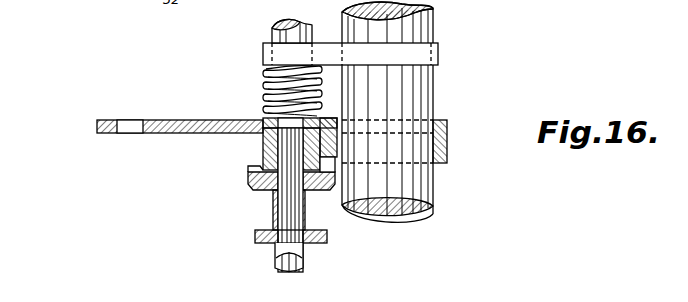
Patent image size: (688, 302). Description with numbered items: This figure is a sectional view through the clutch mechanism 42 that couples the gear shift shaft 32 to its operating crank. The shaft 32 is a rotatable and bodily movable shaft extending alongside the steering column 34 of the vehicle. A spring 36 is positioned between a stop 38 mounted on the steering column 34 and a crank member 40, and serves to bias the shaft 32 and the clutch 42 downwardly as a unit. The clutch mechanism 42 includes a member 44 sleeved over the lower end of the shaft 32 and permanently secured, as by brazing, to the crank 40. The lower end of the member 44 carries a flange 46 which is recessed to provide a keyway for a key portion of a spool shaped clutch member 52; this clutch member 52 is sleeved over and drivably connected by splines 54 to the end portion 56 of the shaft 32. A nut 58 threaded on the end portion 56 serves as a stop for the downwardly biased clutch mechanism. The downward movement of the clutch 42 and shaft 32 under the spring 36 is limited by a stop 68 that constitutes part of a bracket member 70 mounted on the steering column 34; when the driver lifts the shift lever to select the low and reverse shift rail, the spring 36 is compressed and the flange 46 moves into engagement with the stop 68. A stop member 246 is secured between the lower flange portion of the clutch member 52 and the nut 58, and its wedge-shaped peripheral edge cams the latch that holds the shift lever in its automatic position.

The shaft 32 is at (272, 28).
The steering column 34 is at (434, 190).
The spring 36 is at (265, 80).
The stop 38 is at (412, 49).
The crank member 40 is at (170, 121).
The clutch mechanism 42 is at (248, 188).
The member 44 is at (263, 144).
The flange 46 is at (250, 169).
The clutch member 52 is at (264, 194).
The splines 54 is at (274, 119).
The end portion of the shaft 56 is at (311, 241).
The nut 58 is at (283, 262).
The stop 68 is at (306, 194).
The bracket member 70 is at (448, 130).
The stop member 246 is at (266, 242).